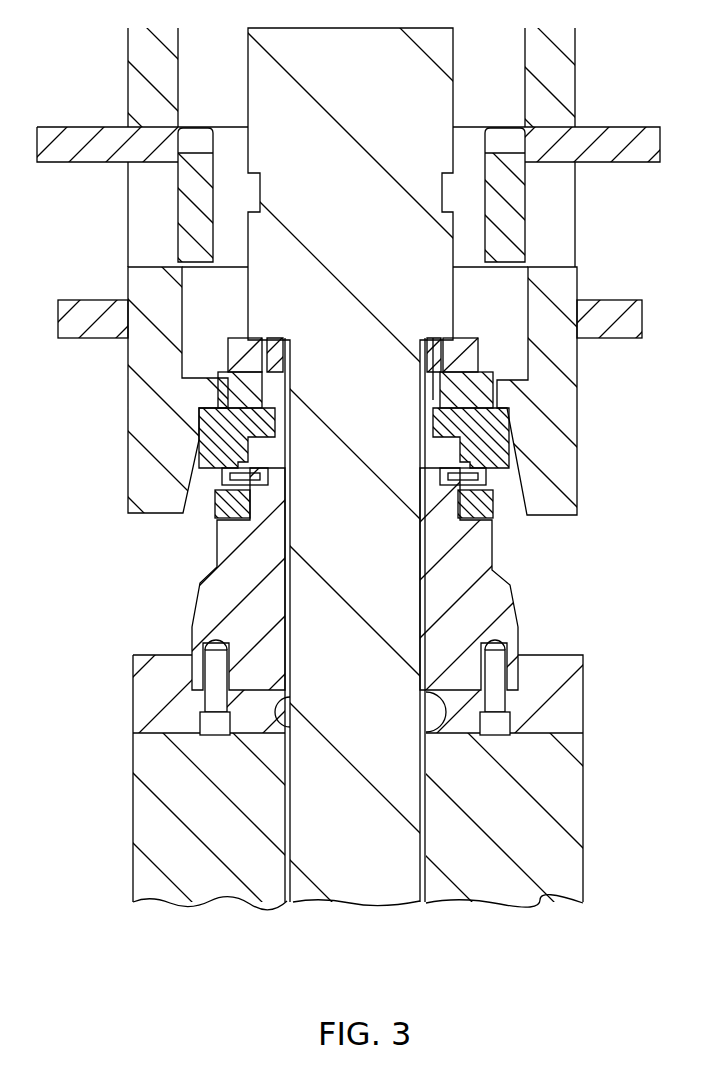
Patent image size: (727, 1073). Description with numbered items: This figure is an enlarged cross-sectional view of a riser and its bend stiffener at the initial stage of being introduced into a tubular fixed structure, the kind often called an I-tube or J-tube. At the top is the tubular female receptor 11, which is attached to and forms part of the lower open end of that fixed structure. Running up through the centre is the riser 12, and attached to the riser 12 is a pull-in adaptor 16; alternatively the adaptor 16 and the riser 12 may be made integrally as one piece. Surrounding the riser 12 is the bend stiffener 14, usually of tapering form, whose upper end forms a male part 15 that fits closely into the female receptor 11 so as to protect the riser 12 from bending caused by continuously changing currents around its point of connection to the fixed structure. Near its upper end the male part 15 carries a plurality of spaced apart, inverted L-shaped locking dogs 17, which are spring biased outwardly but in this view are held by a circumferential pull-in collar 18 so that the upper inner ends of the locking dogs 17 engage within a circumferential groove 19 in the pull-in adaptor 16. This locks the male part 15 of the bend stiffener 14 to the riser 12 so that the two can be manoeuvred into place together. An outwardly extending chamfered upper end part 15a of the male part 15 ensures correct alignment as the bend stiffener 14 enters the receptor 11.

The tubular female receptor 11 is at (560, 82).
The riser 12 is at (447, 561).
The bend stiffener 14 is at (537, 833).
The male part 15 is at (215, 553).
The chamfered upper end part 15a is at (227, 378).
The pull-in adaptor 16 is at (432, 338).
The locking dogs 17 is at (230, 445).
The pull-in collar 18 is at (500, 490).
The circumferential groove 19 is at (428, 423).